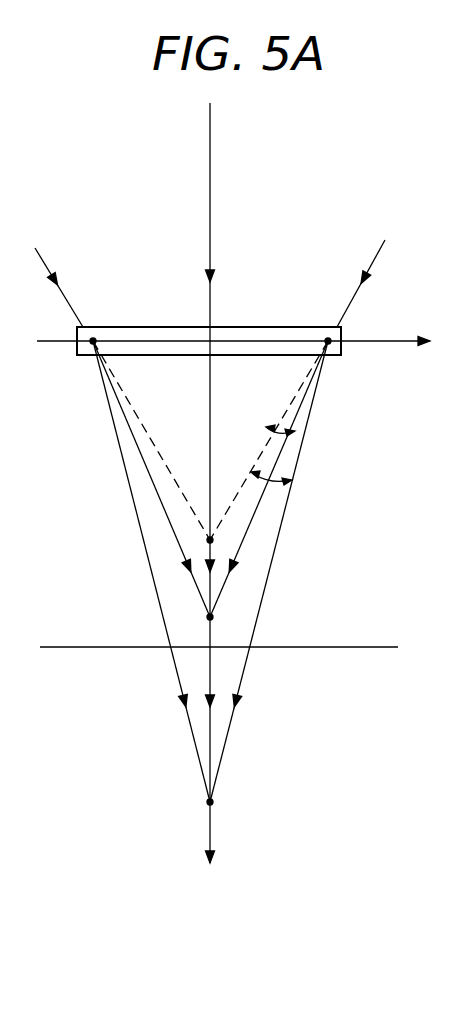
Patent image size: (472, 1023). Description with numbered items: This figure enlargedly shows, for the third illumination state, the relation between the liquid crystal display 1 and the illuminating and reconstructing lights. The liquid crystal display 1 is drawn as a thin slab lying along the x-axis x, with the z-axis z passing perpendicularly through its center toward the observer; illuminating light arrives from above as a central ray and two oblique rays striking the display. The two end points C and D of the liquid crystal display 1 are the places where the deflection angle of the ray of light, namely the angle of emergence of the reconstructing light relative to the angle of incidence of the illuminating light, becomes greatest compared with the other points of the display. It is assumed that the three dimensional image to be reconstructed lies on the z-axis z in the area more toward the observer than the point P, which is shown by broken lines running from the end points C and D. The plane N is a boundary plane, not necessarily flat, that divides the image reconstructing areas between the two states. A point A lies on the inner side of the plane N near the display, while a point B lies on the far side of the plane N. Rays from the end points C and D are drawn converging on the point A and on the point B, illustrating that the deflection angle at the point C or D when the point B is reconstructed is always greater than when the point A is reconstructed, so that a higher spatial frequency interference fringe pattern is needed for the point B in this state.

The liquid crystal display 1 is at (285, 330).
The end point C is at (91, 345).
The end point D is at (331, 337).
The point P is at (215, 544).
The point A is at (207, 616).
The point B is at (208, 803).
The plane N is at (232, 648).
The x-axis x is at (243, 342).
The z-axis z is at (209, 501).